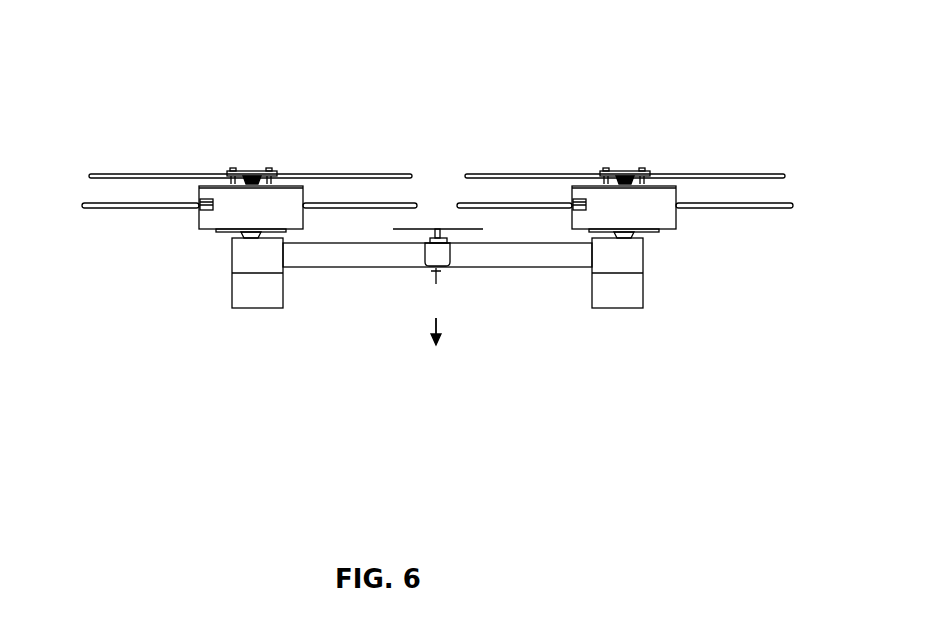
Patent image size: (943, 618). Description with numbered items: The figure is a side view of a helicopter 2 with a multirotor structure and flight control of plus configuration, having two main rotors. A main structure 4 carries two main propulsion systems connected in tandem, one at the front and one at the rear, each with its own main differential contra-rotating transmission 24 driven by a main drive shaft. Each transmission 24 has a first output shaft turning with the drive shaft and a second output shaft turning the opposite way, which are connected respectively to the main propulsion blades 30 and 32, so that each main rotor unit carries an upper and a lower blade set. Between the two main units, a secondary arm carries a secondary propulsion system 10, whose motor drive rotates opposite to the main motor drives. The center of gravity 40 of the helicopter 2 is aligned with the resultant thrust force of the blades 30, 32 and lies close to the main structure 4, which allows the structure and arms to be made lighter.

The helicopter 2 is at (453, 88).
The main structure 4 is at (263, 298).
The secondary propulsion system 10 is at (438, 253).
The main differential contra-rotating transmission 24 is at (205, 243).
The main propulsion blades 30 is at (132, 175).
The main propulsion blades 32 is at (128, 206).
The center of gravity 40 is at (421, 312).